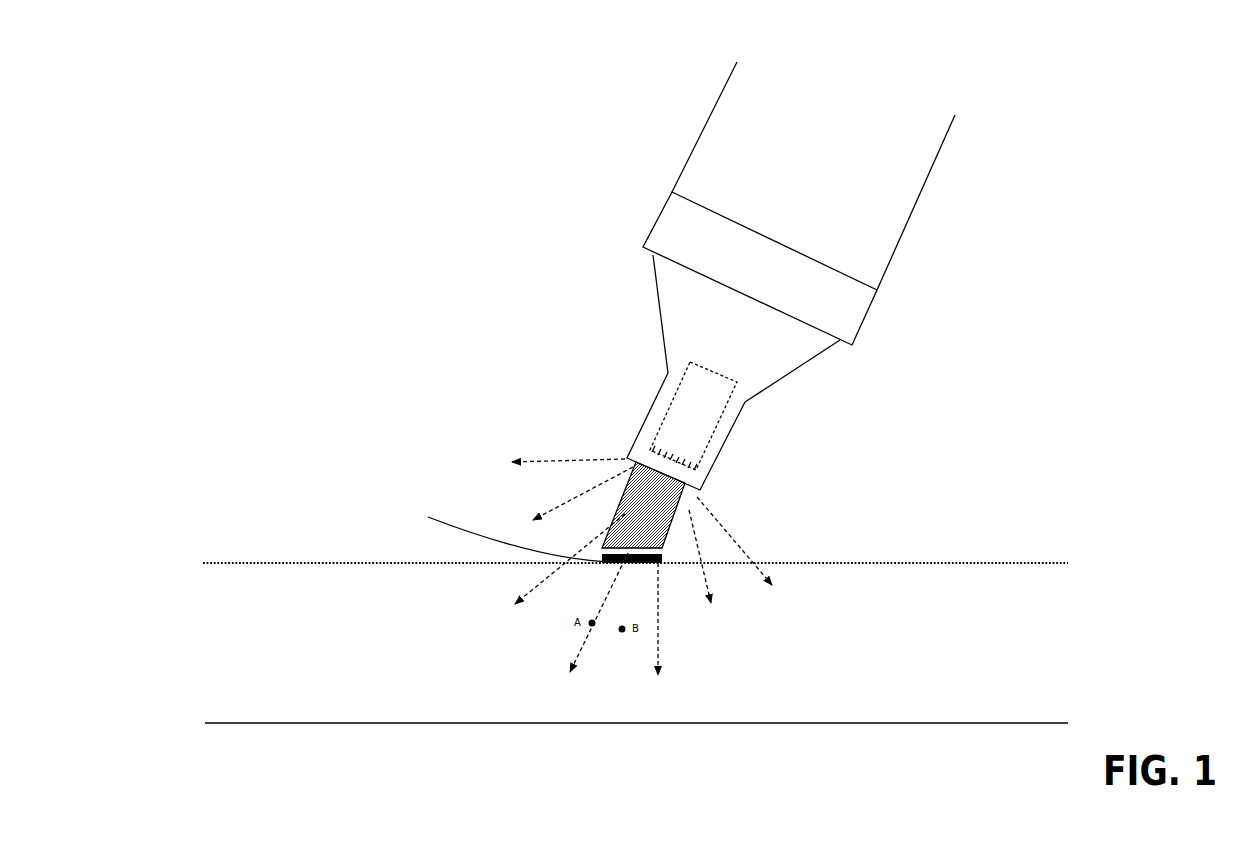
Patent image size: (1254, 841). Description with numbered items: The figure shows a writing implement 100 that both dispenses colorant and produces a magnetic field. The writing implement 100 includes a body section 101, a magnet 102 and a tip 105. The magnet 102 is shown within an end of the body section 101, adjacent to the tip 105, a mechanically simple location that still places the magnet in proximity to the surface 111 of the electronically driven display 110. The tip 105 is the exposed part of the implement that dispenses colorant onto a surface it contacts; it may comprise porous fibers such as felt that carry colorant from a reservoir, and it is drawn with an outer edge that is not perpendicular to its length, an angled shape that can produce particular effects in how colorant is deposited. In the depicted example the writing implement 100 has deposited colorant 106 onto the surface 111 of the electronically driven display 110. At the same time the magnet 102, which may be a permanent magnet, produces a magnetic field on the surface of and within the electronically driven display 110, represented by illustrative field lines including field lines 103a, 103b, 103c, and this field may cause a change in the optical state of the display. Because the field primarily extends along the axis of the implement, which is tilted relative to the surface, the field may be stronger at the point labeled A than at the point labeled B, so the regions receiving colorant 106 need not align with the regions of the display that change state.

The writing implement 100 is at (550, 218).
The body section 101 is at (791, 276).
The magnet 102 is at (702, 437).
The field line 103a is at (545, 571).
The field line 103b is at (586, 629).
The field line 103c is at (652, 634).
The tip 105 is at (673, 517).
The colorant 106 is at (505, 528).
The electronically driven display 110 is at (636, 683).
The surface 111 is at (631, 539).